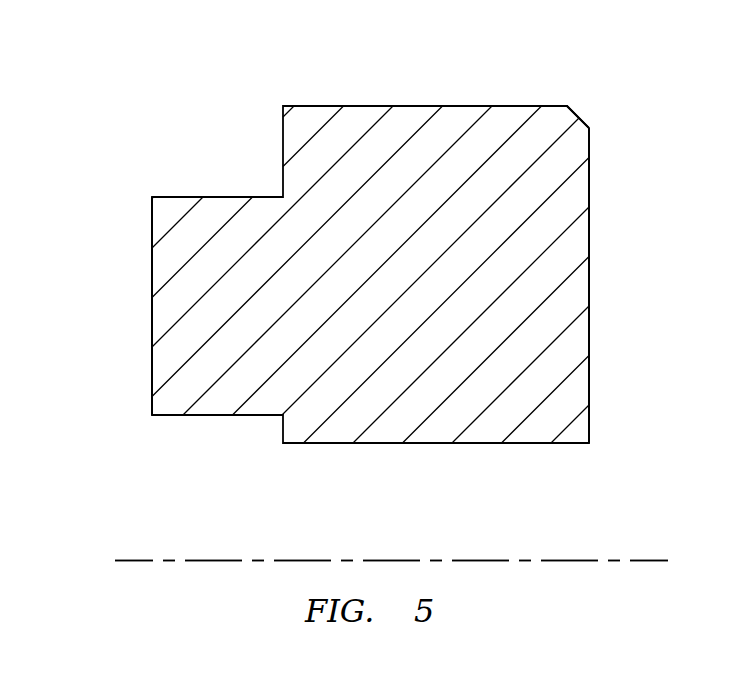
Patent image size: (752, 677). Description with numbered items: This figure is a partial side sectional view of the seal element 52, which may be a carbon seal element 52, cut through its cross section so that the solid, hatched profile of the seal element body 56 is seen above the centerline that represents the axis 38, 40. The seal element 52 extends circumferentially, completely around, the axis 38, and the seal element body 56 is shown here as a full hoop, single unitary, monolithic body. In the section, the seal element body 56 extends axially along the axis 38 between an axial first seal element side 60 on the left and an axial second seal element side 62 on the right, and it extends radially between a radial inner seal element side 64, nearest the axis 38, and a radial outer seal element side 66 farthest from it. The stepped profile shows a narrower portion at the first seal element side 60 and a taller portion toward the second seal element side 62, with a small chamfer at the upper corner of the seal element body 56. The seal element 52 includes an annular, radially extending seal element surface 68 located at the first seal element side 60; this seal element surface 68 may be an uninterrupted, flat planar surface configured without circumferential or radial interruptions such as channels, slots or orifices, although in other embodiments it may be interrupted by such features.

The seal element 52 is at (617, 118).
The seal element body 56 is at (522, 106).
The axial first seal element side 60 is at (140, 367).
The axial second seal element side 62 is at (589, 365).
The radial inner seal element side 64 is at (409, 445).
The radial outer seal element side 66 is at (450, 106).
The seal element surface 68 is at (152, 304).
The axis 38 is at (652, 560).
The axis 40 is at (652, 560).